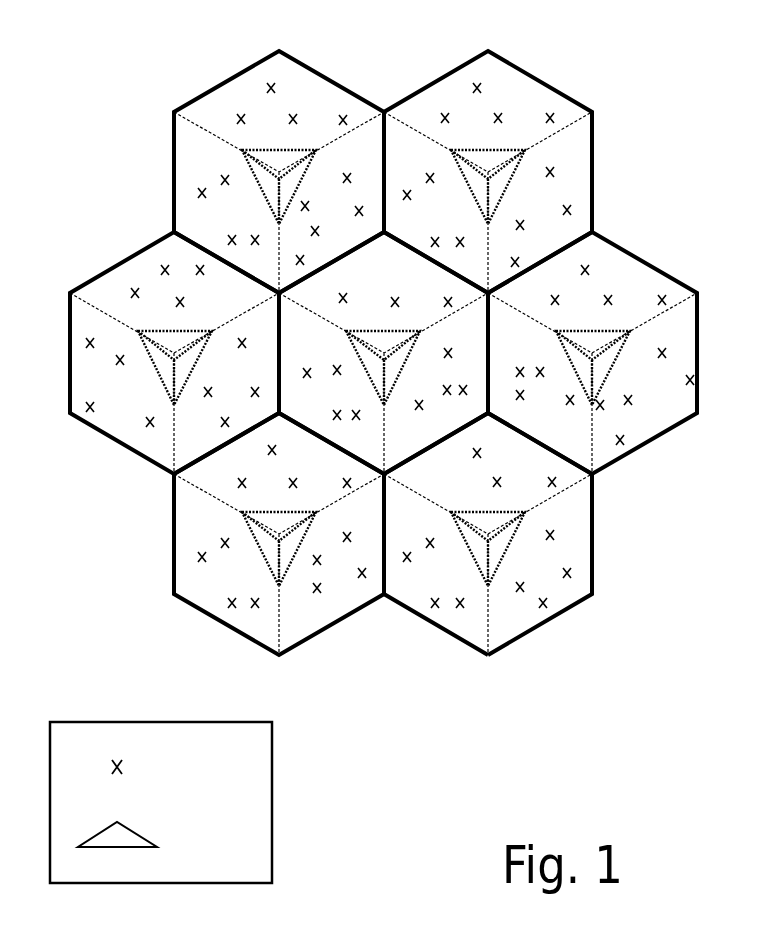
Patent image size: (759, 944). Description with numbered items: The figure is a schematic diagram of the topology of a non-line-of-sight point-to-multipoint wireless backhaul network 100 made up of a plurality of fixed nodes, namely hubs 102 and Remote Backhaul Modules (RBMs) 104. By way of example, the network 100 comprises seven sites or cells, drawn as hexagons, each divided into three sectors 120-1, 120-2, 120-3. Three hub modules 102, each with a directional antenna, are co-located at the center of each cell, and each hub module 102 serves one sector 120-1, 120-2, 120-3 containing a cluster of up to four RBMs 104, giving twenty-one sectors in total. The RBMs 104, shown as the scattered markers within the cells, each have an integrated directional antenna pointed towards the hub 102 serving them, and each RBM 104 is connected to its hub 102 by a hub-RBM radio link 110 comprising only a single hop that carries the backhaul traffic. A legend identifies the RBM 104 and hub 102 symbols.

The wireless backhaul network 100 is at (143, 70).
The hub-RBM radio link 110 is at (253, 568).
The hub module 102 is at (293, 538).
The Remote Backhaul Module (RBM) 104 is at (310, 592).
The first sector of the cell 120-1 is at (535, 452).
The second sector of the cell 120-2 is at (473, 622).
The third sector of the cell 120-3 is at (570, 595).